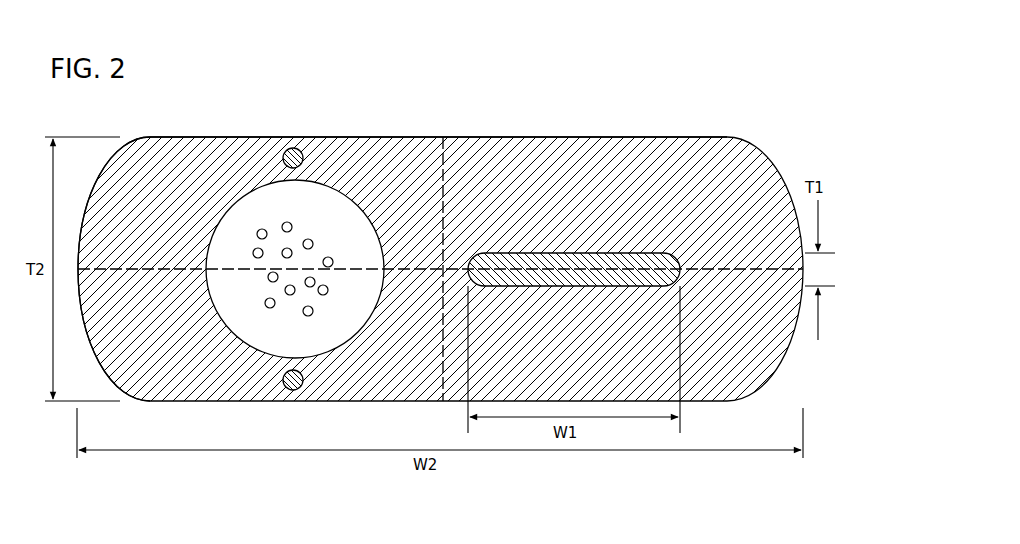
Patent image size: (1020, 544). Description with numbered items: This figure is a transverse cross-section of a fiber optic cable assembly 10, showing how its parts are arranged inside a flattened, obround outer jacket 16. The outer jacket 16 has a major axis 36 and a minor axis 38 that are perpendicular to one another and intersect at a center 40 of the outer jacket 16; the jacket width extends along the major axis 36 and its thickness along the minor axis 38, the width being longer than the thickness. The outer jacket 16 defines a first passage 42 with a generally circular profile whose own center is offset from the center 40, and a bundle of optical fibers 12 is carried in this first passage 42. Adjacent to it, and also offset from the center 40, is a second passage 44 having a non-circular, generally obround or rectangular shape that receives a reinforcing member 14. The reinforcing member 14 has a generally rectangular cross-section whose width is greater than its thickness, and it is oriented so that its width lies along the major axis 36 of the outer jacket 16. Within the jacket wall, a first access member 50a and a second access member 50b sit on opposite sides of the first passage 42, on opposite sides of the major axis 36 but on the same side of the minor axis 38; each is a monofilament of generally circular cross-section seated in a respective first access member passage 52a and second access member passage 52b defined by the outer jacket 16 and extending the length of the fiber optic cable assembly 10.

The fiber optic cable assembly 10 is at (483, 86).
The optical fiber 12 is at (314, 244).
The reinforcing member 14 is at (613, 217).
The outer jacket 16 is at (593, 136).
The major axis 36 is at (133, 270).
The minor axis 38 is at (443, 180).
The center 40 is at (443, 270).
The first passage 42 is at (218, 318).
The second passage 44 is at (523, 253).
The first access member 50a is at (283, 152).
The second access member 50b is at (284, 392).
The first access member passage 52a is at (293, 148).
The second access member passage 52b is at (300, 386).